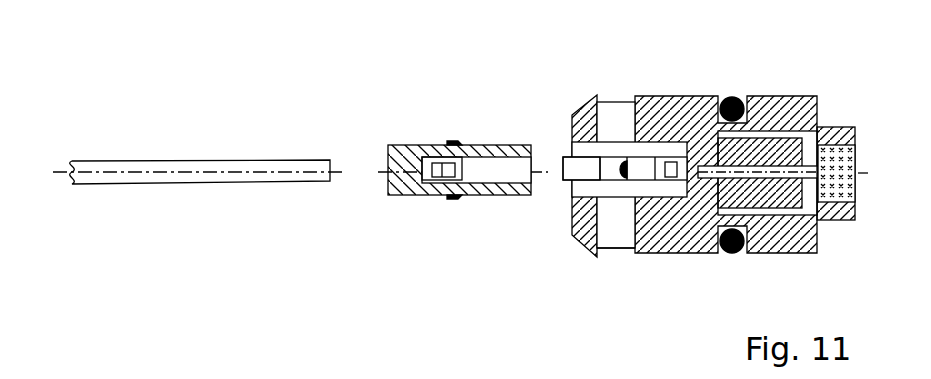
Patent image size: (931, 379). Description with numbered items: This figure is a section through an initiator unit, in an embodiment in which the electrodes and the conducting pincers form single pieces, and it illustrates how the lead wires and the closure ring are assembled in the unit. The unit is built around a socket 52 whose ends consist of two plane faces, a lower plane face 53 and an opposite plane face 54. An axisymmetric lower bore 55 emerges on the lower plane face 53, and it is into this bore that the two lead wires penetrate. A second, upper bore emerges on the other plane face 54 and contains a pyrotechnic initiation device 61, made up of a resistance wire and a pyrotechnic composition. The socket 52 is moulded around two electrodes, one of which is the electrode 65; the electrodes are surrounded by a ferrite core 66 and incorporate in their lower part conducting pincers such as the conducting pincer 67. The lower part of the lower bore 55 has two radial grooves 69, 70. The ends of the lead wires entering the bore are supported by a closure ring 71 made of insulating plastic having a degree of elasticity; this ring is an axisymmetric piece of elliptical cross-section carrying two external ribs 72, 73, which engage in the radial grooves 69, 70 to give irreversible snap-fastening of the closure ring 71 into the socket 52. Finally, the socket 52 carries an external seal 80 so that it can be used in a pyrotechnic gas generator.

The socket 52 is at (790, 97).
The lower plane face 53 is at (572, 128).
The plane face 54 is at (858, 130).
The lower bore 55 is at (657, 186).
The pyrotechnic initiation device 61 is at (863, 169).
The electrode 65 is at (787, 247).
The ferrite core 66 is at (767, 215).
The conducting pincer 67 is at (571, 172).
The radial groove 69 is at (611, 122).
The radial groove 70 is at (615, 240).
The closure ring 71 is at (508, 196).
The external rib 72 is at (450, 141).
The external rib 73 is at (444, 196).
The external seal 80 is at (741, 97).